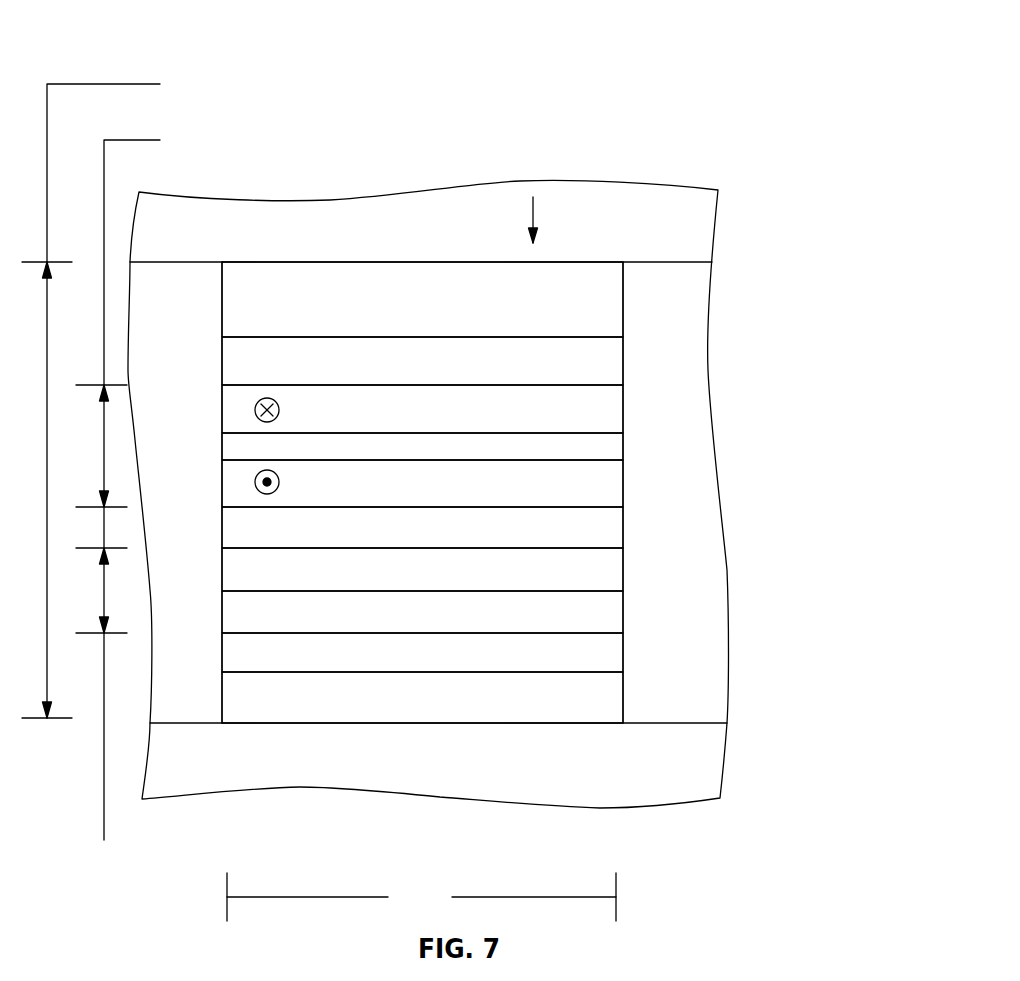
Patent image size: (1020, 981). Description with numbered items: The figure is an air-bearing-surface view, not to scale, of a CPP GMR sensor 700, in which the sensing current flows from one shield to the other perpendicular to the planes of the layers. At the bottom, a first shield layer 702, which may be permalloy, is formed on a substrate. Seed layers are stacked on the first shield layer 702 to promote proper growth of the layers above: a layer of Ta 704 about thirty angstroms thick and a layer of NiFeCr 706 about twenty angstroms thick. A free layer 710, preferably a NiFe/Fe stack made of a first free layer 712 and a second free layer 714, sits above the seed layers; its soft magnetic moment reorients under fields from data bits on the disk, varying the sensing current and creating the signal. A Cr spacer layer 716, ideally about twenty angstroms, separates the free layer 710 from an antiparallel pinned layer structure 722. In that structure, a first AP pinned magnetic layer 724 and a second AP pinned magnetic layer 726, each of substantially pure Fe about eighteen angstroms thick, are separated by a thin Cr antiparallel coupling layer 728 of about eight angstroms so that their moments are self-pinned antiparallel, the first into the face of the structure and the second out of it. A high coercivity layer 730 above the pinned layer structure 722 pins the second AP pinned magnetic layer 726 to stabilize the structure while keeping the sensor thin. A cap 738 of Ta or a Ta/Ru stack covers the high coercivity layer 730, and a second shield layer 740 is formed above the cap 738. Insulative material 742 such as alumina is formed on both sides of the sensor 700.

The CPP GMR sensor 700 is at (640, 122).
The first shield layer 702 is at (725, 752).
The layer of Ta 704 is at (623, 697).
The layer of NiFeCr 706 is at (623, 655).
The free layer 710 is at (104, 840).
The first free layer 712 is at (623, 607).
The second free layer 714 is at (623, 565).
The spacer layer 716 is at (623, 528).
The antiparallel pinned layer structure 722 is at (438, 484).
The first AP pinned magnetic layer 724 is at (623, 492).
The second AP pinned magnetic layer 726 is at (623, 403).
The antiparallel coupling layer 728 is at (623, 445).
The high coercivity layer 730 is at (623, 357).
The cap 738 is at (623, 297).
The second shield layer 740 is at (718, 221).
The insulative material 742 is at (712, 468).